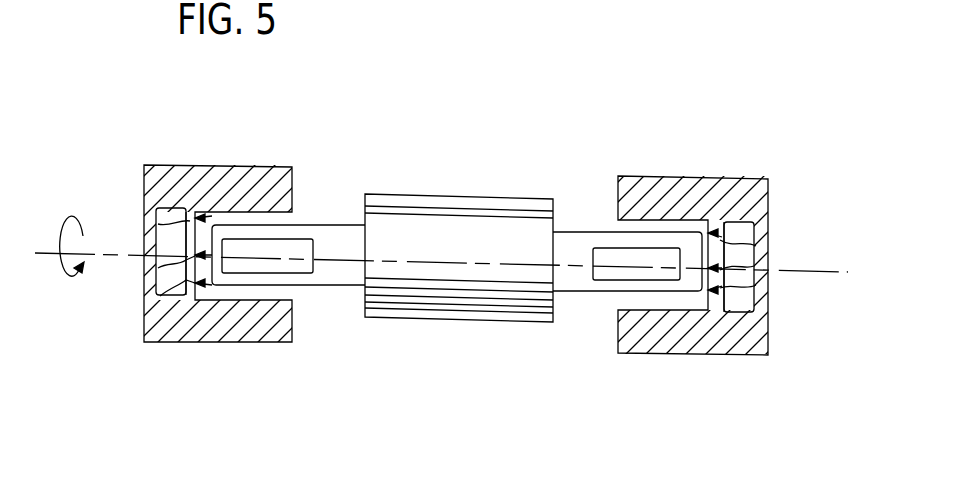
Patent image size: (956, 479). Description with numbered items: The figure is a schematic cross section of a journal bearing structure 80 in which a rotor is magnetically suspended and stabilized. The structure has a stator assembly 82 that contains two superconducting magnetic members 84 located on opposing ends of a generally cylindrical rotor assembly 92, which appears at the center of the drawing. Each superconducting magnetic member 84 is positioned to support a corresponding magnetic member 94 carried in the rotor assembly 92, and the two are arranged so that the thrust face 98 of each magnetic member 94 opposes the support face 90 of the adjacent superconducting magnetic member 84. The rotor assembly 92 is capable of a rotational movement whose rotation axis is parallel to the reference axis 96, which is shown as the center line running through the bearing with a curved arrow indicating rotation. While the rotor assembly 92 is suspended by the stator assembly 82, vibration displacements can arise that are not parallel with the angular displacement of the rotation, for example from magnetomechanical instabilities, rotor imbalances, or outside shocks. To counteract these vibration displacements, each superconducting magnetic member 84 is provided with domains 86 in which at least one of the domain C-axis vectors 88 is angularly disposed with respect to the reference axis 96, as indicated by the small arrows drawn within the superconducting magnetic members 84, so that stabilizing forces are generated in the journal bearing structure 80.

The journal bearing structure 80 is at (621, 122).
The stator assembly 82 is at (147, 165).
The superconducting magnetic member 84 is at (158, 223).
The domains 86 is at (186, 279).
The domain C-axis vector 88 is at (190, 286).
The support face 90 is at (196, 296).
The rotor assembly 92 is at (488, 322).
The magnetic member 94 is at (285, 250).
The reference axis 96 is at (60, 242).
The thrust face 98 is at (214, 245).